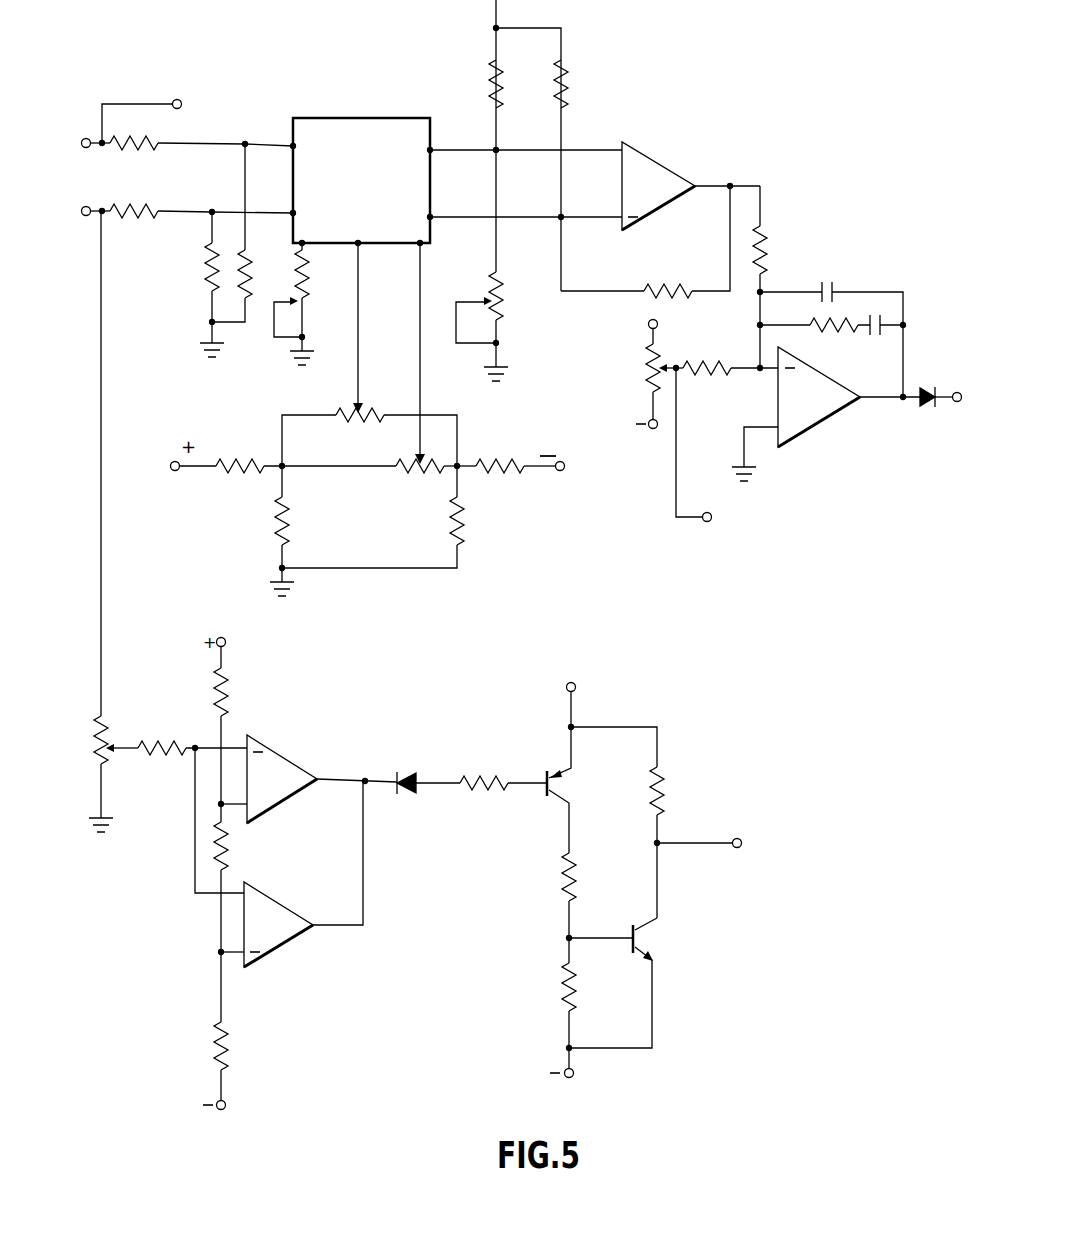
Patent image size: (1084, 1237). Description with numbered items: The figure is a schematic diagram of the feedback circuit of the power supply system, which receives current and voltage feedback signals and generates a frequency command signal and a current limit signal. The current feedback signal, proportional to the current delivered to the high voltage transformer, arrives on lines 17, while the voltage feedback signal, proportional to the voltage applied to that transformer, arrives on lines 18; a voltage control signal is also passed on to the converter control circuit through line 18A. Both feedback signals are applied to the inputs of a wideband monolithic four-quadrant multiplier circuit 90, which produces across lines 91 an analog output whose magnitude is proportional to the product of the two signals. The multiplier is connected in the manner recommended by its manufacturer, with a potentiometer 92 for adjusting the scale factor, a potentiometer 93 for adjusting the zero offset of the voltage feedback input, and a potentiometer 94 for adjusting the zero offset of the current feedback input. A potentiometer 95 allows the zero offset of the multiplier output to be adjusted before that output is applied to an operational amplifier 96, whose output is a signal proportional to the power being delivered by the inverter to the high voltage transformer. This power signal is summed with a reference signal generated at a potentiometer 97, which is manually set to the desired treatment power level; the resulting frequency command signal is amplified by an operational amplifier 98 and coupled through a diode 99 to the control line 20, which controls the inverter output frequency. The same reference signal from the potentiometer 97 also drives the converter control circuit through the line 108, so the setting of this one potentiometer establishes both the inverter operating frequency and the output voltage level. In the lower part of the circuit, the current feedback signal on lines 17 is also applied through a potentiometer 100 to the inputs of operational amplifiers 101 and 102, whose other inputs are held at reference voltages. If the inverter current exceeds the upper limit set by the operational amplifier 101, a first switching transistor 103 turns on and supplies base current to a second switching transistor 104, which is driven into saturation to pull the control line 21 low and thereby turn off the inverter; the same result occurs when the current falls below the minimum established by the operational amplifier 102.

The lines 17 is at (87, 206).
The lines 18 is at (87, 136).
The line 18A is at (182, 103).
The line 20 is at (963, 390).
The line 21 is at (739, 838).
The four-quadrant multiplier circuit 90 is at (335, 118).
The lines 91 is at (538, 151).
The potentiometer 92 is at (306, 302).
The potentiometer 93 is at (362, 407).
The potentiometer 94 is at (432, 472).
The potentiometer 95 is at (500, 305).
The operational amplifier 96 is at (665, 166).
The potentiometer 97 is at (648, 376).
The operational amplifier 98 is at (840, 430).
The diode 99 is at (932, 410).
The potentiometer 100 is at (152, 700).
The operational amplifier 101 is at (290, 761).
The operational amplifier 102 is at (272, 899).
The first switching transistor 103 is at (560, 768).
The second switching transistor 104 is at (650, 952).
The line 108 is at (715, 521).